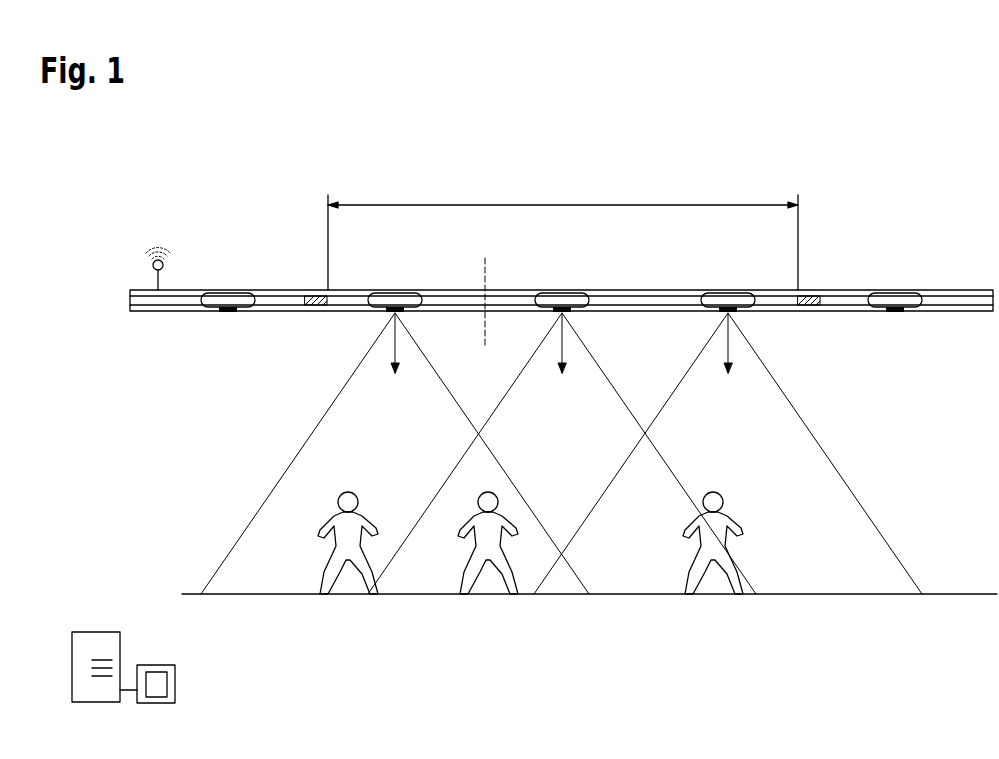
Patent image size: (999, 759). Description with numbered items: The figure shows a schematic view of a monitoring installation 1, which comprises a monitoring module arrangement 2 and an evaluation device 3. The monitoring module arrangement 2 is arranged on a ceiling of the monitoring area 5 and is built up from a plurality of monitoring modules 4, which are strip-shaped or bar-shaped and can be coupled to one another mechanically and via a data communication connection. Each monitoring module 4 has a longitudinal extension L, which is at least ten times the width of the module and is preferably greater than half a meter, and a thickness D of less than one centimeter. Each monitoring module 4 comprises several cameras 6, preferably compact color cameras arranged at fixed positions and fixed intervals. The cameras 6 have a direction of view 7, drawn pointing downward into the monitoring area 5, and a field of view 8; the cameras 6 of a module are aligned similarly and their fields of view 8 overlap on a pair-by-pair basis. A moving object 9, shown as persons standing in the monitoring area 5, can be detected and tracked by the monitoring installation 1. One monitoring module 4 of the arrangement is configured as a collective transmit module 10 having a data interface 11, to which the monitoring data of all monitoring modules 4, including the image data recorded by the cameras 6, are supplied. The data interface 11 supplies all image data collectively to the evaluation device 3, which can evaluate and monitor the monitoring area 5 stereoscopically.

The monitoring installation 1 is at (135, 182).
The monitoring module arrangement 2 is at (195, 338).
The evaluation device 3 is at (86, 632).
The monitoring module 4 is at (462, 290).
The monitoring area 5 is at (808, 535).
The camera 6 is at (252, 292).
The direction of view 7 is at (400, 345).
The field of view 8 is at (428, 357).
The moving object 9 is at (325, 596).
The collective transmit module 10 is at (561, 309).
The data interface 11 is at (153, 265).
The thickness D is at (487, 262).
The longitudinal extension L is at (563, 205).